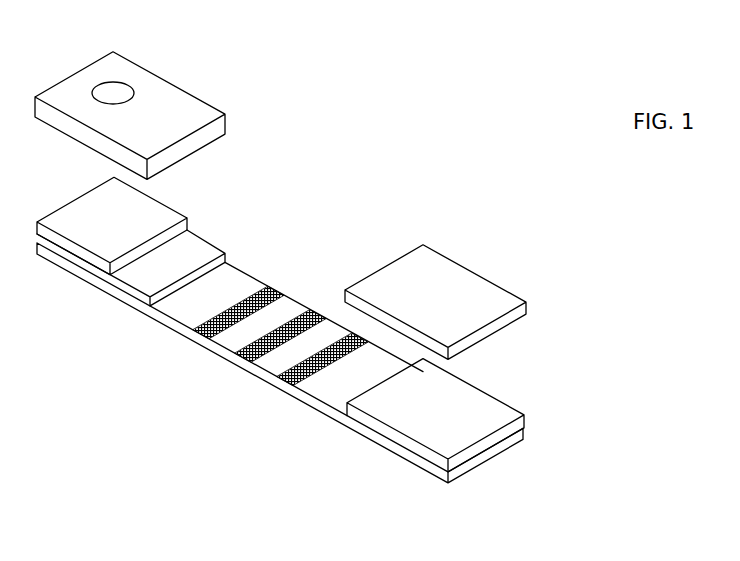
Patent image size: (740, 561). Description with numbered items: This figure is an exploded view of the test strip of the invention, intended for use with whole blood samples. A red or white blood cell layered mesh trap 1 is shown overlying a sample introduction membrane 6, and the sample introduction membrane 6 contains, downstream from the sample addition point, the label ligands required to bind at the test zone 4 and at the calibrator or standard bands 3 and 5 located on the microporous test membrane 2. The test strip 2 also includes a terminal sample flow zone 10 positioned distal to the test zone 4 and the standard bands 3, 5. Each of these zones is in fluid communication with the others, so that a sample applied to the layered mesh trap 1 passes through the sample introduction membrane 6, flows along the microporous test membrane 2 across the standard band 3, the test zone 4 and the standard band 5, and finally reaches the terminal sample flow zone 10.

The layered mesh trap 1 is at (153, 210).
The microporous test membrane 2 is at (247, 270).
The calibrator or standard band 3 is at (195, 326).
The test zone 4 is at (240, 356).
The calibrator or standard band 5 is at (283, 382).
The sample introduction membrane 6 is at (121, 89).
The terminal sample flow zone 10 is at (462, 272).